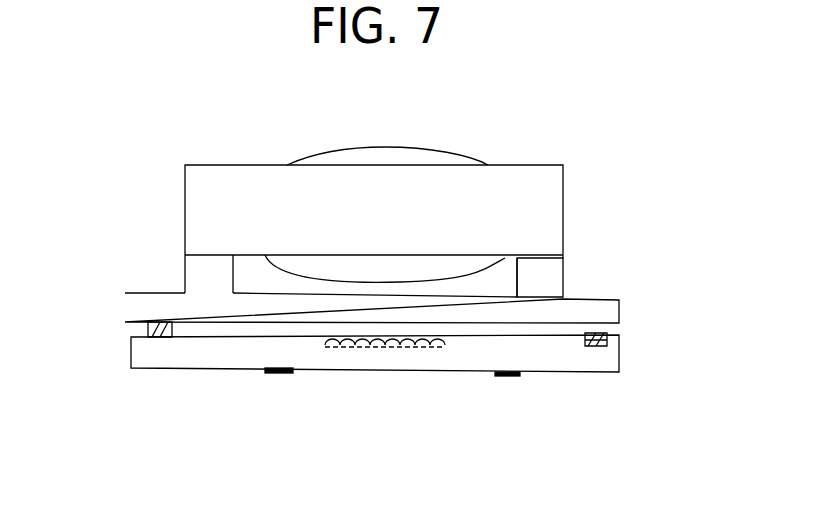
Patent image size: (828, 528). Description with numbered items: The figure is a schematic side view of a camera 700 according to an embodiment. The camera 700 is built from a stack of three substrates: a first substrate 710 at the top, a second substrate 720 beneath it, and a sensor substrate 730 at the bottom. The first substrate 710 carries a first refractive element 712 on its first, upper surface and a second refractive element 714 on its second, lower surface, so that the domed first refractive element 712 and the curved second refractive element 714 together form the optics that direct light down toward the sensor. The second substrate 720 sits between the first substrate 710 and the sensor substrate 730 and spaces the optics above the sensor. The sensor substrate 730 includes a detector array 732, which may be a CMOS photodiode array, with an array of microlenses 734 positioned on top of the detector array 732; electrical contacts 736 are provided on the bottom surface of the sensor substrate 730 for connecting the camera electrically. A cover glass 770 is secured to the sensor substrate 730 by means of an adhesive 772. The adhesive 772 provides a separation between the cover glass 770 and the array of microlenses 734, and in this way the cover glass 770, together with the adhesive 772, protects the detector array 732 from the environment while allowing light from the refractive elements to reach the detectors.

The camera 700 is at (212, 107).
The first substrate 710 is at (565, 193).
The first refractive element 712 is at (430, 152).
The second refractive element 714 is at (445, 282).
The second substrate 720 is at (565, 279).
The sensor substrate 730 is at (95, 339).
The detector array 732 is at (373, 348).
The array of microlenses 734 is at (447, 340).
The electrical contacts 736 is at (280, 373).
The cover glass 770 is at (162, 288).
The adhesive 772 is at (609, 338).